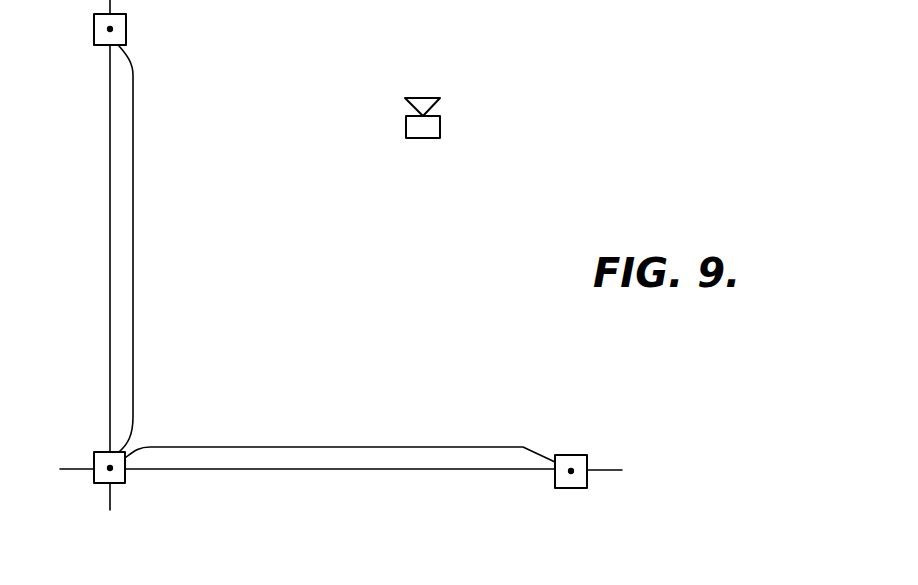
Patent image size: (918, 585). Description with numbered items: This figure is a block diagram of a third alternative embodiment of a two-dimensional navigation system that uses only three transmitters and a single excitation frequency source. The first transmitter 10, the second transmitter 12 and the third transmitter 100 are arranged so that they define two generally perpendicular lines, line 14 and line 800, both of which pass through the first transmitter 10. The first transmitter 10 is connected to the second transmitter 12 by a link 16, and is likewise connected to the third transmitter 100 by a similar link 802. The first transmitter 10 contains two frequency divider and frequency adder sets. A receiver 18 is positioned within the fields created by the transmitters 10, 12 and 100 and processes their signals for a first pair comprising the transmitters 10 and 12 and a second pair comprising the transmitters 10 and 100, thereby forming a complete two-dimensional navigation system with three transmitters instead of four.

The third transmitter 100 is at (126, 33).
The line 800 is at (109, 207).
The link 802 is at (134, 279).
The first transmitter 10 is at (93, 455).
The second transmitter 12 is at (572, 455).
The line 14 is at (262, 471).
The link 16 is at (417, 447).
The receiver 18 is at (406, 126).